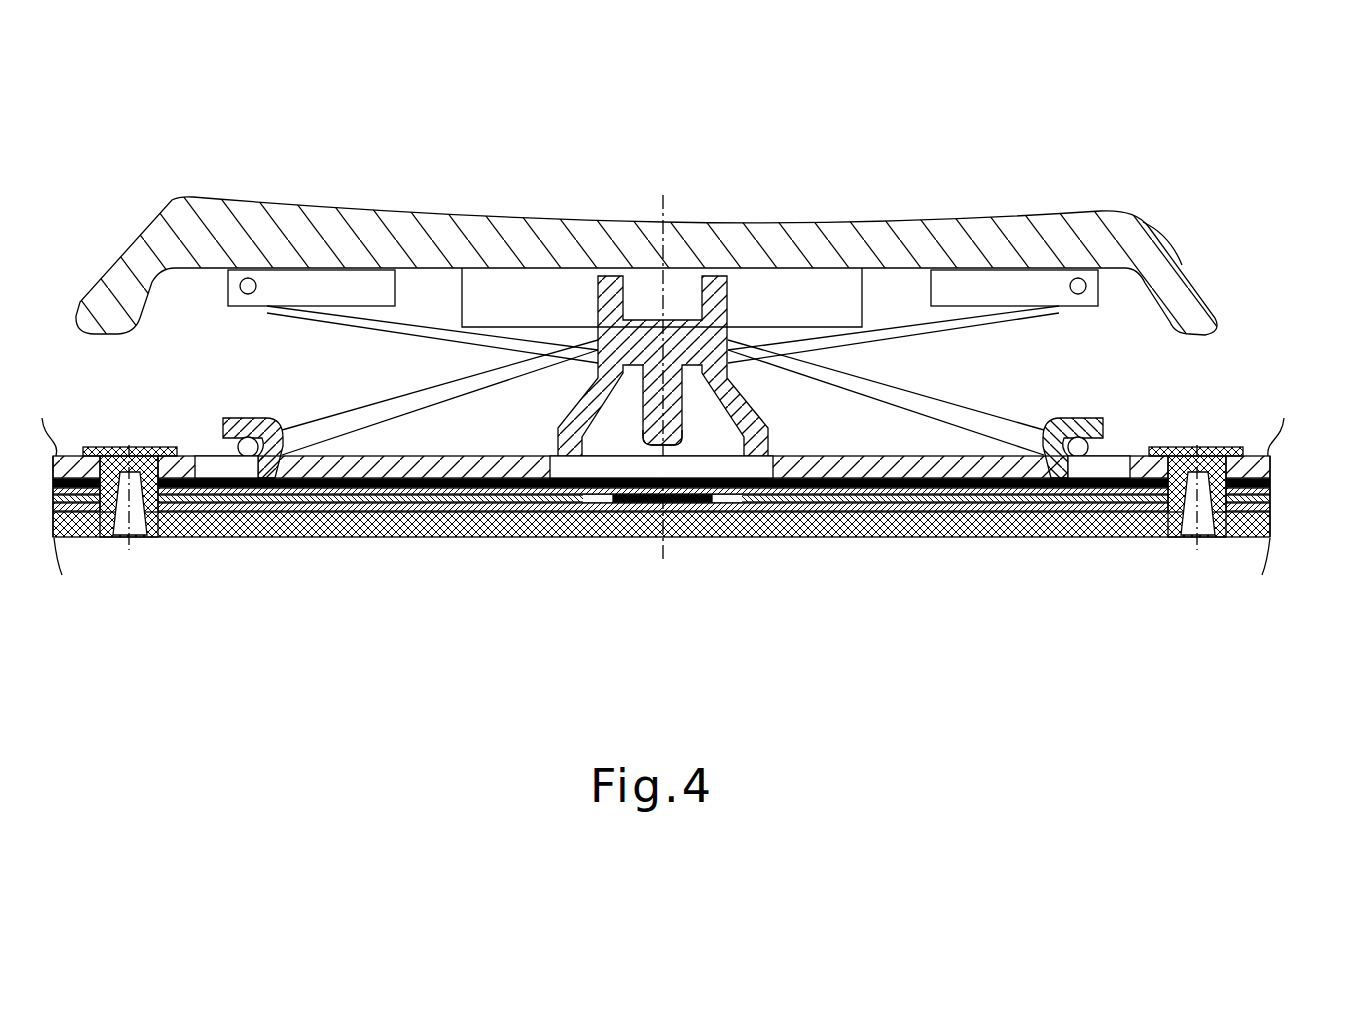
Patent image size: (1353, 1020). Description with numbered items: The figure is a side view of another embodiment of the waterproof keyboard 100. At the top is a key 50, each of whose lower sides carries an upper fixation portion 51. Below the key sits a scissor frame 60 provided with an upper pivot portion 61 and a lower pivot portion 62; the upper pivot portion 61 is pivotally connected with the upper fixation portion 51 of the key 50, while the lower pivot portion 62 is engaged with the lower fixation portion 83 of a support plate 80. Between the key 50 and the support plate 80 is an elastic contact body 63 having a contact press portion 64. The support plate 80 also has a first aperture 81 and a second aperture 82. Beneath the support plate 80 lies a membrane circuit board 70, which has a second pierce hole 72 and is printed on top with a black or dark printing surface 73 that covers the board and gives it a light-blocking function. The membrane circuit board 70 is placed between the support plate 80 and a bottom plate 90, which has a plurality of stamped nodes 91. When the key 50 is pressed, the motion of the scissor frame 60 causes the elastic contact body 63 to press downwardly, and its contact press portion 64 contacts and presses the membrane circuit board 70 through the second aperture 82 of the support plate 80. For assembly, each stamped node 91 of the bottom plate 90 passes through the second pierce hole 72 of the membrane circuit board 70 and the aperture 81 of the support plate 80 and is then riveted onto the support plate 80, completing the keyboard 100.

The waterproof keyboard 100 is at (1143, 156).
The key 50 is at (838, 243).
The upper fixation portion 51 is at (310, 283).
The scissor frame 60 is at (860, 376).
The upper pivot portion 61 is at (350, 314).
The lower pivot portion 62 is at (303, 432).
The elastic contact body 63 is at (612, 292).
The contact press portion 64 is at (670, 424).
The membrane circuit board 70 is at (980, 538).
The second pierce hole 72 is at (105, 538).
The printing surface 73 is at (1270, 486).
The support plate 80 is at (438, 538).
The first aperture 81 is at (73, 455).
The second aperture 82 is at (613, 462).
The lower fixation portion 83 is at (281, 538).
The bottom plate 90 is at (872, 538).
The stamped node 91 is at (131, 450).